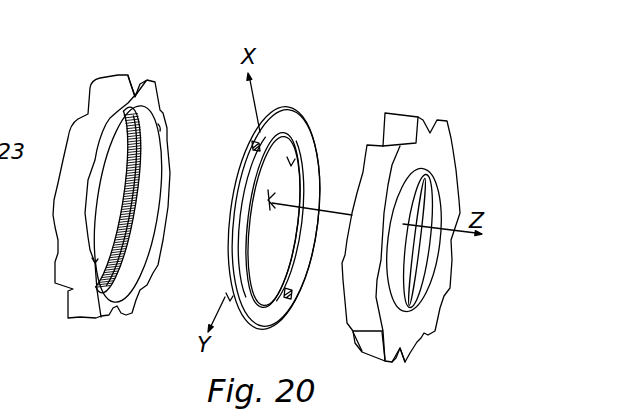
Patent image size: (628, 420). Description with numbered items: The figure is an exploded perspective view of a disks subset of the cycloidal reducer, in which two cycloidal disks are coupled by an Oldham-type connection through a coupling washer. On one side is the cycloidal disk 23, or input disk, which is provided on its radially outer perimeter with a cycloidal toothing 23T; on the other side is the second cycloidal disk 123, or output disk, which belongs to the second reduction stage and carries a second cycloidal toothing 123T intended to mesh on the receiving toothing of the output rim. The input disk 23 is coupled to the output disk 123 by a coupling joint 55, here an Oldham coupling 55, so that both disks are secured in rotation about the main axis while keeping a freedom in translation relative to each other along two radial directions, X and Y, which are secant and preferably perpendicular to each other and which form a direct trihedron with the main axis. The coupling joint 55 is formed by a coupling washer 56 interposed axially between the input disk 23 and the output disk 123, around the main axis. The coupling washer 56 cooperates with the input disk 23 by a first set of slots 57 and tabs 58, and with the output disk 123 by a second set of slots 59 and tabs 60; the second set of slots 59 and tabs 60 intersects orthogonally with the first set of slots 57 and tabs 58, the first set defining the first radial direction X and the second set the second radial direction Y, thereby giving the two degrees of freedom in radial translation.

The second cycloidal disk 123 is at (98, 117).
The second cycloidal toothing 123T is at (138, 71).
The slots 59 is at (160, 128).
The coupling joint 55 is at (302, 98).
The coupling washer 56 is at (297, 343).
The slots 57 is at (255, 147).
The tabs 60 is at (292, 163).
The cycloidal disk 23 is at (447, 166).
The cycloidal toothing 23T is at (440, 334).
The tabs 58 is at (365, 142).